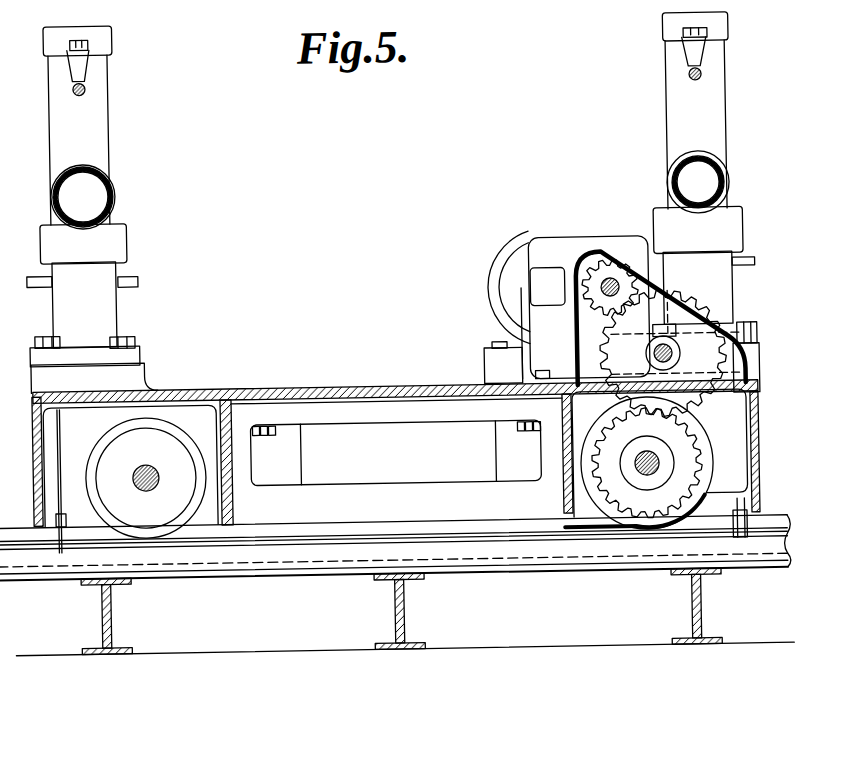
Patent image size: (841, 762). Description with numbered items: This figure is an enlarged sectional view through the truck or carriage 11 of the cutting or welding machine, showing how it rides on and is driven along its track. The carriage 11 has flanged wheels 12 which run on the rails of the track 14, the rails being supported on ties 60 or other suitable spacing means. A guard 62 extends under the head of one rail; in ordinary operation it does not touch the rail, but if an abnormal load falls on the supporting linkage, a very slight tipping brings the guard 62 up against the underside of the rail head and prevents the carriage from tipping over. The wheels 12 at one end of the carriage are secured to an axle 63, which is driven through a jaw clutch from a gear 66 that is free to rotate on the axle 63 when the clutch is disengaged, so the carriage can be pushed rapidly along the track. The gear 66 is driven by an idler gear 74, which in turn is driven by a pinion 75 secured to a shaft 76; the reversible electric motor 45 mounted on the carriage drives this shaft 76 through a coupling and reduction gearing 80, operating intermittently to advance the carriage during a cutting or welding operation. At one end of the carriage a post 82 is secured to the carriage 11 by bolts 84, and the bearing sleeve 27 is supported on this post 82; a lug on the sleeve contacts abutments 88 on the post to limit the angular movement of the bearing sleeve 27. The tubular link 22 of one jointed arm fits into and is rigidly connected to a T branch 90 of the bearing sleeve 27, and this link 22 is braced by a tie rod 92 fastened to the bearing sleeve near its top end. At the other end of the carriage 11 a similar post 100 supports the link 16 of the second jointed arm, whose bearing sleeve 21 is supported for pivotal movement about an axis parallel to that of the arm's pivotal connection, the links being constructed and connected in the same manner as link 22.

The carriage 11 is at (207, 379).
The flanged wheels 12 is at (109, 443).
The track 14 is at (202, 587).
The link 16 is at (709, 168).
The bearing sleeve 21 is at (722, 106).
The link 22 is at (104, 172).
The bearing sleeve 27 is at (105, 120).
The reversible electric motor 45 is at (495, 275).
The ties 60 is at (108, 612).
The guard 62 is at (54, 547).
The axle 63 is at (659, 468).
The gear 66 is at (609, 449).
The idler gear 74 is at (705, 405).
The pinion 75 is at (612, 274).
The shaft 76 is at (599, 300).
The reduction gearing 80 is at (593, 251).
The post 82 is at (109, 303).
The bolts 84 is at (46, 331).
The abutments 88 is at (30, 272).
The T branch 90 is at (119, 187).
The tie rod 92 is at (91, 78).
The post 100 is at (722, 284).